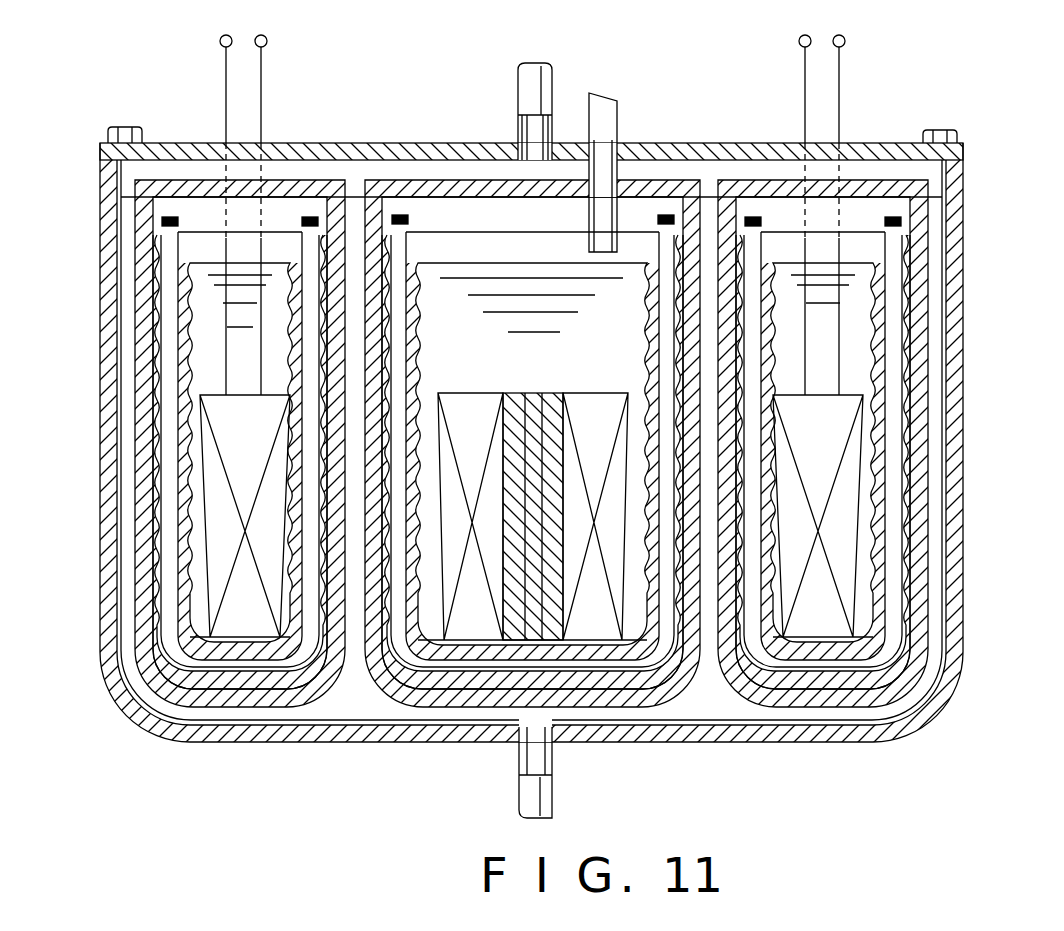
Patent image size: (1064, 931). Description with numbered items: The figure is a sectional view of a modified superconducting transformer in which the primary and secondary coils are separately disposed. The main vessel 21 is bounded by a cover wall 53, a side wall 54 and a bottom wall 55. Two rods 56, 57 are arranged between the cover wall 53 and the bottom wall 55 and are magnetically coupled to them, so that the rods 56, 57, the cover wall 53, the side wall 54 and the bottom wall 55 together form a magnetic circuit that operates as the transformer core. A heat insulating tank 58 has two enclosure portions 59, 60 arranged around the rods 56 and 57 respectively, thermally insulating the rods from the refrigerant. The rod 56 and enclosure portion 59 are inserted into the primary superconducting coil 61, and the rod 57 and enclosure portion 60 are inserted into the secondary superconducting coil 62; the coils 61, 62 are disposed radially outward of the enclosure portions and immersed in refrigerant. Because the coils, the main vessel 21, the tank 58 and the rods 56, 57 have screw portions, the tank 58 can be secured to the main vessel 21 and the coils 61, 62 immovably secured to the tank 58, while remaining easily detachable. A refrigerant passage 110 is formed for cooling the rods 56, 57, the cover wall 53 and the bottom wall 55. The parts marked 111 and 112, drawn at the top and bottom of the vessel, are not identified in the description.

The main vessel 21 is at (977, 322).
The cover wall 53 is at (965, 175).
The side wall 54 is at (965, 598).
The bottom wall 55 is at (725, 735).
The rod 56 is at (373, 351).
The rod 57 is at (690, 347).
The heat insulating tank 58 is at (925, 428).
The enclosure portion 59 is at (418, 297).
The enclosure portion 60 is at (645, 291).
The primary superconducting coil 61 is at (237, 400).
The secondary superconducting coil 62 is at (588, 408).
The refrigerant passage 110 is at (413, 720).
The inlet pipe 111 is at (518, 92).
The outlet pipe 112 is at (520, 797).